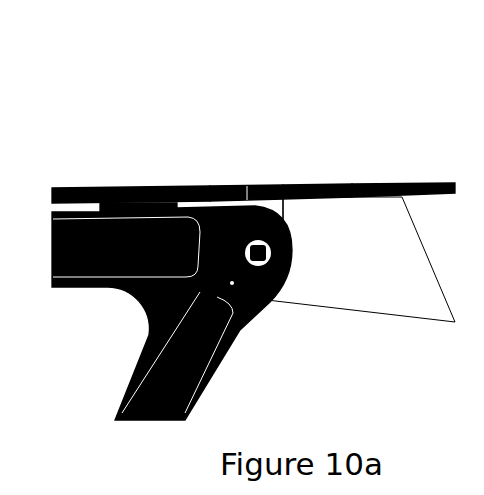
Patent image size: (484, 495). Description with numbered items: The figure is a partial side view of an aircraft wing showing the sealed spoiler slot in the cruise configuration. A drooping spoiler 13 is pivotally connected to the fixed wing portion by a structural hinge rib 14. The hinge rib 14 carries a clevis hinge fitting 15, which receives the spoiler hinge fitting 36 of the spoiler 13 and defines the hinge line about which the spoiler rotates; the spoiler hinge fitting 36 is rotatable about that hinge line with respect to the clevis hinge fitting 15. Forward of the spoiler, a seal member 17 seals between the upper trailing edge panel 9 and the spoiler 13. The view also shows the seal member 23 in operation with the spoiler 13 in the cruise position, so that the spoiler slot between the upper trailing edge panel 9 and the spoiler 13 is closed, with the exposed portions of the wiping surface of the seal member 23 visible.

The upper trailing edge panel 9 is at (120, 184).
The drooping spoiler 13 is at (362, 178).
The structural hinge rib 14 is at (213, 365).
The clevis hinge fitting 15 is at (263, 270).
The seal member 17 is at (235, 177).
The seal member 23 is at (263, 180).
The spoiler hinge fitting 36 is at (318, 265).